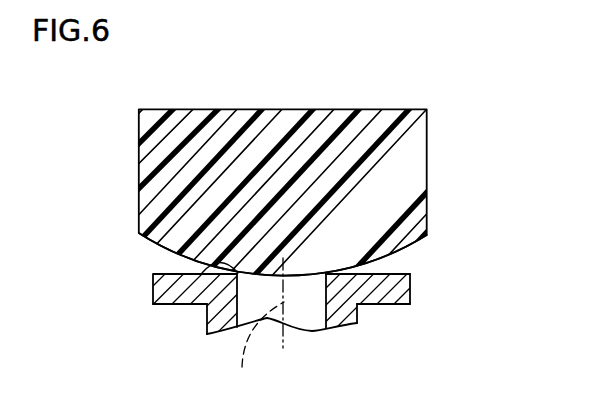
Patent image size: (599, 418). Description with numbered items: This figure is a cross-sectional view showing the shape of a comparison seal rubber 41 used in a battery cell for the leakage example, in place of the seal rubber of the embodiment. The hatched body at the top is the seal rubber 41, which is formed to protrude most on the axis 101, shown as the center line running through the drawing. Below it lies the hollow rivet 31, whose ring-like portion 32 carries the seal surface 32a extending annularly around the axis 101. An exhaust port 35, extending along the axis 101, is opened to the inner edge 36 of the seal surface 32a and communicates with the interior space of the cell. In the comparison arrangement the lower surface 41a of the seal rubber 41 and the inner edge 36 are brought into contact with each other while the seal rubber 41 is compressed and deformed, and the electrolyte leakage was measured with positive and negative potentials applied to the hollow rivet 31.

The seal rubber 41 is at (338, 122).
The surface of seal rubber 41a is at (168, 250).
The ring-like portion 32 is at (392, 295).
The seal surface 32a is at (398, 273).
The inner edge of seal surface 36 is at (187, 304).
The exhaust port 35 is at (328, 295).
The axis 101 is at (255, 350).
The hollow rivet 31 is at (377, 322).